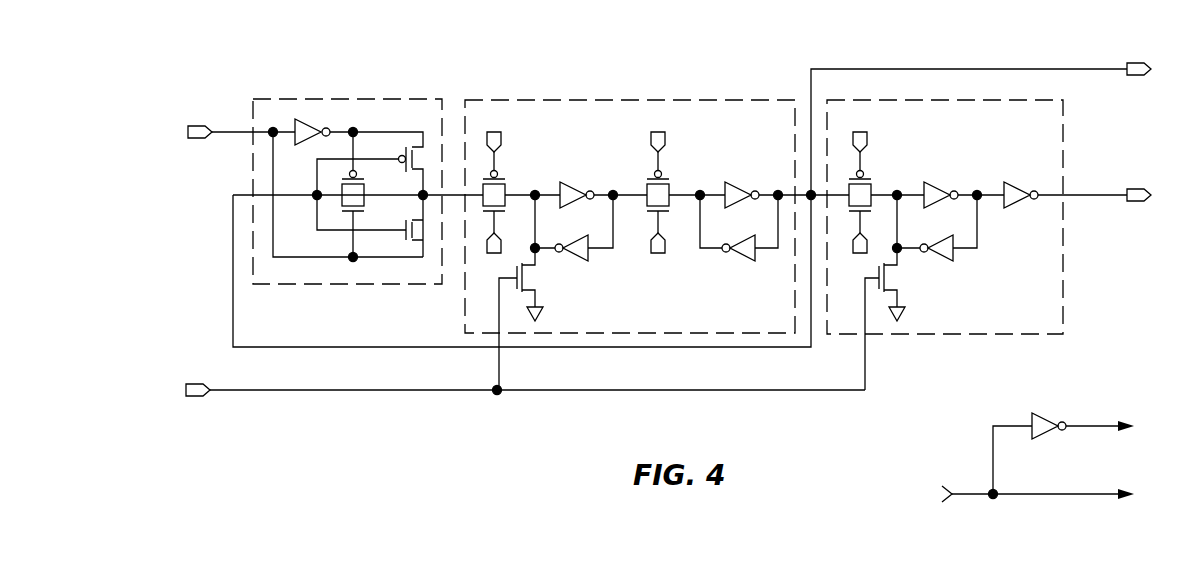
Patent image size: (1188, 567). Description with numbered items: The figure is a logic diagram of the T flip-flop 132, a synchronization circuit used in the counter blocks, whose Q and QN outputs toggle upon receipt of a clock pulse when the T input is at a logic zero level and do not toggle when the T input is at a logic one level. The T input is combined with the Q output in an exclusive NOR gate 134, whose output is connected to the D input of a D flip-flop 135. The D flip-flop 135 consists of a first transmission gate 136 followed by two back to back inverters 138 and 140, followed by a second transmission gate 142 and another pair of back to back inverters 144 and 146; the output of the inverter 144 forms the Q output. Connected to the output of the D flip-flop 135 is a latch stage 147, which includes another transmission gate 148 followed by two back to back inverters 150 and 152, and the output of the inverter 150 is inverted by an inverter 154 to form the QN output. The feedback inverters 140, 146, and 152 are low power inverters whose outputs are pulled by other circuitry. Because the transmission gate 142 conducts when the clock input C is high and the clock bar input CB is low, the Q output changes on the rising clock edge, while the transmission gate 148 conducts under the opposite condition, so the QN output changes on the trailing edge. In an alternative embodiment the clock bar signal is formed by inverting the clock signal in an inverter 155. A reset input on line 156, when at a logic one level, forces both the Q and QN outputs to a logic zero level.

The T flip-flop 132 is at (214, 52).
The exclusive NOR gate 134 is at (386, 99).
The D flip-flop 135 is at (590, 99).
The first transmission gate 136 is at (507, 188).
The inverter 138 is at (573, 180).
The feedback inverter 140 is at (571, 262).
The second transmission gate 142 is at (671, 188).
The inverter 144 is at (739, 180).
The feedback inverter 146 is at (737, 262).
The latch stage 147 is at (1063, 135).
The transmission gate 148 is at (873, 188).
The inverter 150 is at (934, 180).
The feedback inverter 152 is at (935, 262).
The inverter 154 is at (1012, 180).
The inverter 155 is at (1050, 419).
The reset input line 156 is at (436, 392).